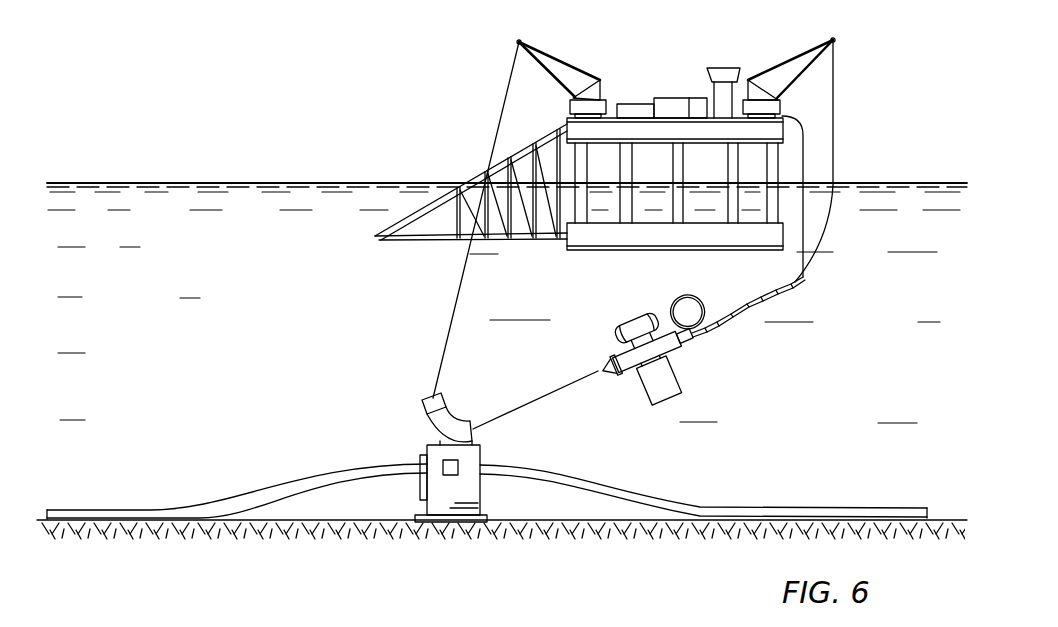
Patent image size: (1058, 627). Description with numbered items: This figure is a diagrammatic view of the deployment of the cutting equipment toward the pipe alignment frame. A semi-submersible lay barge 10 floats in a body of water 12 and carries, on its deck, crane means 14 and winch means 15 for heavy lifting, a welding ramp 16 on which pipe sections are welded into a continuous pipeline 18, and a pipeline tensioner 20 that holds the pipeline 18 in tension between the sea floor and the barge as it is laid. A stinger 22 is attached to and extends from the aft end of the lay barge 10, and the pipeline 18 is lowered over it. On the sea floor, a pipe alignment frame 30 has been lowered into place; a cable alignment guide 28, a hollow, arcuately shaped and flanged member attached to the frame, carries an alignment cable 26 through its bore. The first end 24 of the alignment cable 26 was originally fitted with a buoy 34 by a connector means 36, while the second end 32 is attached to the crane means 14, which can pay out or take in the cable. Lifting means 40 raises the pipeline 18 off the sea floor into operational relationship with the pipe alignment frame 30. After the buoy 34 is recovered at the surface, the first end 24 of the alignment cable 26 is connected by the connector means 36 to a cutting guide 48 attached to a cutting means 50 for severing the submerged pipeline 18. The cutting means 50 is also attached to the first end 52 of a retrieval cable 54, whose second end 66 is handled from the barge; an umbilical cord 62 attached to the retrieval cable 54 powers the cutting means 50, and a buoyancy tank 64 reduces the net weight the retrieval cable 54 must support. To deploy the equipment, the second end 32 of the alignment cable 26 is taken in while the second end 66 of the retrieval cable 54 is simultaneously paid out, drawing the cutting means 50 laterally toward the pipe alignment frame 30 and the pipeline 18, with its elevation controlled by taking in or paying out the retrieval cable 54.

The lay barge 10 is at (728, 62).
The body of water 12 is at (232, 180).
The crane means 14 is at (542, 48).
The winch means 15 is at (697, 97).
The welding ramp 16 is at (635, 100).
The pipeline 18 is at (230, 500).
The pipeline tensioner 20 is at (668, 97).
The stinger 22 is at (520, 240).
The first end of alignment cable 24 is at (611, 389).
The alignment cable 26 is at (538, 408).
The cable alignment guide 28 is at (458, 418).
The pipe alignment frame 30 is at (481, 448).
The second end of alignment cable 32 is at (607, 84).
The buoy 34 is at (683, 293).
The connector means 36 is at (598, 372).
The lifting means 40 is at (421, 489).
The cutting guide 48 is at (635, 363).
The cutting means 50 is at (678, 387).
The first end of retrieval cable 52 is at (688, 337).
The retrieval cable 54 is at (827, 225).
The umbilical cord 62 is at (793, 278).
The buoyancy tank 64 is at (635, 320).
The second end of retrieval cable 66 is at (757, 78).